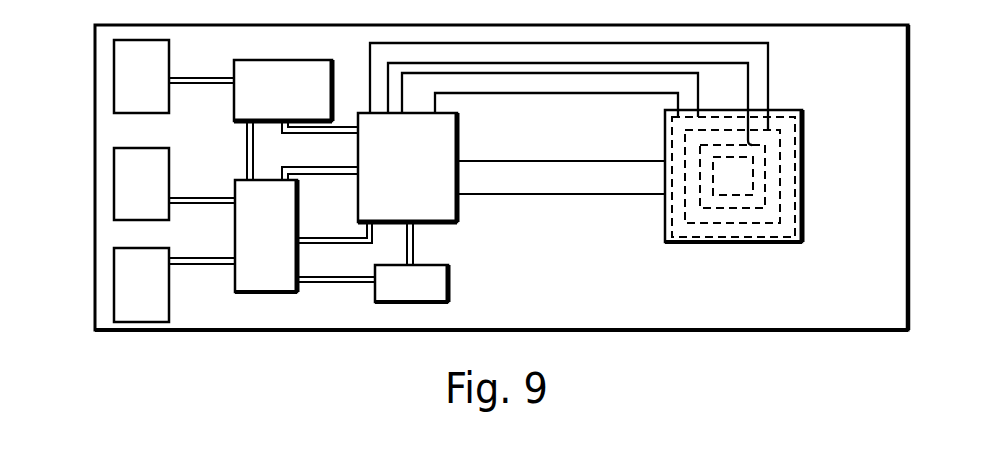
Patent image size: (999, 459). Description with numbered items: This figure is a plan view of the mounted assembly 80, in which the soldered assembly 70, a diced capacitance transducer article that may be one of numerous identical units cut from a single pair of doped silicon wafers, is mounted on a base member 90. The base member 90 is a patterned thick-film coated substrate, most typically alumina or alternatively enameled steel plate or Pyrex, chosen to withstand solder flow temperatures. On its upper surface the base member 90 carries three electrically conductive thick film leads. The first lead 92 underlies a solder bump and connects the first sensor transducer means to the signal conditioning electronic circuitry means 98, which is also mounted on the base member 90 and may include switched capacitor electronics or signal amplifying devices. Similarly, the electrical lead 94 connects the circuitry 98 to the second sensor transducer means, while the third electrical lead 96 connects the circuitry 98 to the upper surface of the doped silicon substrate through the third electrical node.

The soldered assembly 70 is at (695, 242).
The mounted assembly 80 is at (541, 177).
The base member 90 is at (890, 232).
The first lead 92 is at (537, 186).
The electrical lead 94 is at (762, 50).
The third electrical lead 96 is at (516, 84).
The signal conditioning electronic circuitry means 98 is at (458, 250).